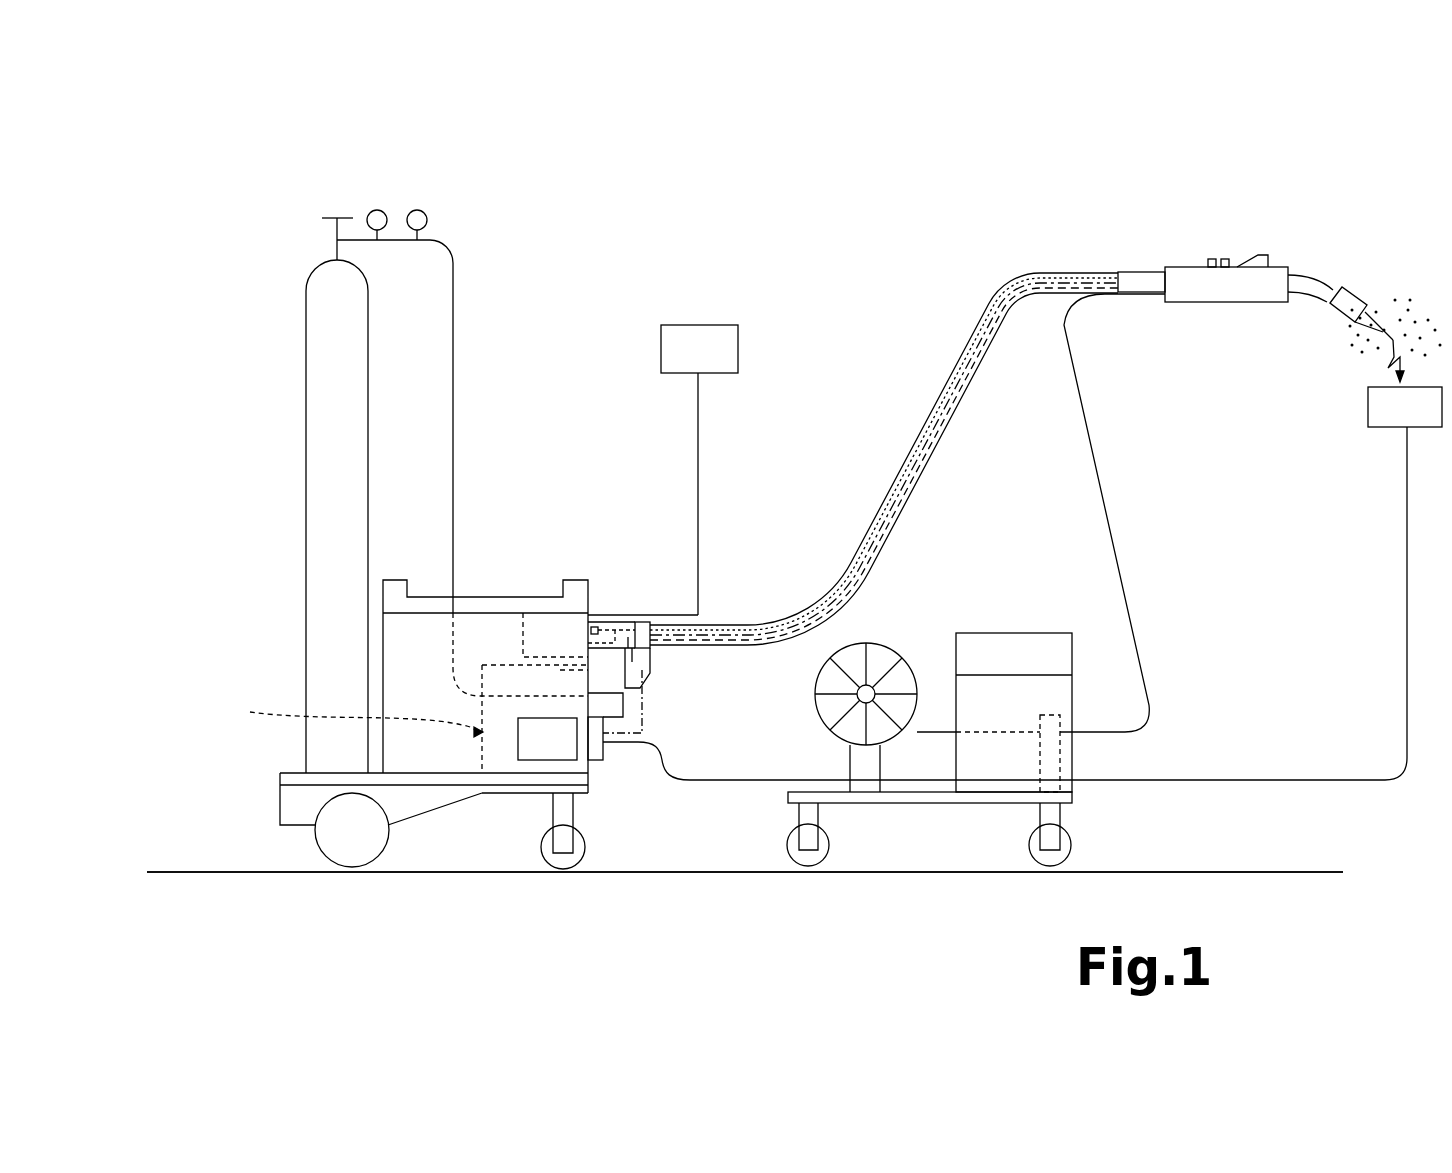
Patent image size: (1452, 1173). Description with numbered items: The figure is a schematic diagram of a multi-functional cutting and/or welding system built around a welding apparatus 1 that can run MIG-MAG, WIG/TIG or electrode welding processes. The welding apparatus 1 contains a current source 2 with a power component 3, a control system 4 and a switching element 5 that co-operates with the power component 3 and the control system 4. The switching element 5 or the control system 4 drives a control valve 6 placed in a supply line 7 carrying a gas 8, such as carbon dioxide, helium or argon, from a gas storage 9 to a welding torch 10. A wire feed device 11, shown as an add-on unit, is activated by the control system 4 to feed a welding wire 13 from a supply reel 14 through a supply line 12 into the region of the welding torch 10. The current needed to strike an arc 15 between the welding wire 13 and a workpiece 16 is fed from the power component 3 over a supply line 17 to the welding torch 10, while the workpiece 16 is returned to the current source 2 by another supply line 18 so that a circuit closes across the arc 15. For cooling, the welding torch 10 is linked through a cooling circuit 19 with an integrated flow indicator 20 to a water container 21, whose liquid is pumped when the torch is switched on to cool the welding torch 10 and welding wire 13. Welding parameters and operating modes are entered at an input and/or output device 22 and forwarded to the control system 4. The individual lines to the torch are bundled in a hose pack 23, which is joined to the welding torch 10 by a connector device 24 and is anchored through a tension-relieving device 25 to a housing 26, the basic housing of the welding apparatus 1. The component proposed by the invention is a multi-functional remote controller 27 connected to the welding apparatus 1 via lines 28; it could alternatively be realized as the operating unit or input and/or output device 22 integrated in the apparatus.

The welding apparatus 1 is at (232, 203).
The current source 2 is at (539, 456).
The power component 3 is at (540, 747).
The control system 4 is at (354, 712).
The switching element 5 is at (610, 790).
The control valve 6 is at (605, 712).
The supply line 7 is at (1046, 290).
The gas 8 is at (1373, 278).
The gas storage 9 is at (336, 348).
The welding torch 10 is at (1280, 226).
The wire feed device 11 is at (1128, 832).
The supply line 12 is at (1124, 541).
The welding wire 13 is at (984, 733).
The supply reel 14 is at (876, 655).
The arc 15 is at (1370, 372).
The workpiece 16 is at (1417, 407).
The supply line 17 is at (960, 343).
The supply line 18 is at (1407, 620).
The cooling circuit 19 is at (812, 545).
The flow indicator 20 is at (596, 630).
The water container 21 is at (548, 627).
The input and/or output device 22 is at (586, 582).
The hose pack 23 is at (706, 628).
The connector device 24 is at (1140, 283).
The tension-relieving device 25 is at (643, 633).
The housing 26 is at (644, 662).
The multi-functional remote controller 27 is at (696, 348).
The lines 28 is at (697, 437).